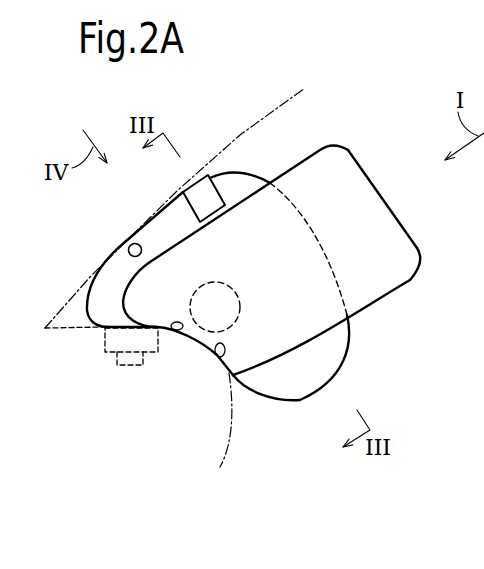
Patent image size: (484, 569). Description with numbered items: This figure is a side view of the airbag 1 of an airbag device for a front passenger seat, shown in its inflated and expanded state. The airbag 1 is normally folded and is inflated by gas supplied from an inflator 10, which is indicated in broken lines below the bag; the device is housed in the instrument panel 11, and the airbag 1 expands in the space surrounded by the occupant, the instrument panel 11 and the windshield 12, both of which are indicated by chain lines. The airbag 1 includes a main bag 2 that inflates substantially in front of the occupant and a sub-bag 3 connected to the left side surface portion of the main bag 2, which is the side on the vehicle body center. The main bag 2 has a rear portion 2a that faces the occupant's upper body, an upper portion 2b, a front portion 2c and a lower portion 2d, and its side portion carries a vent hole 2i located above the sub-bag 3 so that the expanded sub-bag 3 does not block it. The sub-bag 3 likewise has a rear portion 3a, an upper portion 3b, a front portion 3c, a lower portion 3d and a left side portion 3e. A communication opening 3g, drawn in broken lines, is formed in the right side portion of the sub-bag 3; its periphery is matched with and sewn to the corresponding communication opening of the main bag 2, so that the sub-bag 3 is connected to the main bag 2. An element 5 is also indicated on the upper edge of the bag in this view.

The airbag 1 is at (421, 226).
The main bag 2 is at (358, 357).
The rear portion of main bag 2a is at (309, 230).
The upper portion of main bag 2b is at (177, 196).
The front portion of main bag 2c is at (221, 356).
The lower portion of main bag 2d is at (300, 403).
The vent hole 2i is at (125, 237).
The sub-bag 3 is at (357, 158).
The rear portion of sub-bag 3a is at (374, 187).
The upper portion of sub-bag 3b is at (300, 157).
The front portion of sub-bag 3c is at (175, 331).
The lower portion of sub-bag 3d is at (375, 299).
The left side portion of sub-bag 3e is at (392, 274).
The communication opening 3g is at (233, 290).
The connector 5 is at (202, 185).
The inflator 10 is at (130, 367).
The instrument panel 11 is at (226, 455).
The windshield 12 is at (286, 99).